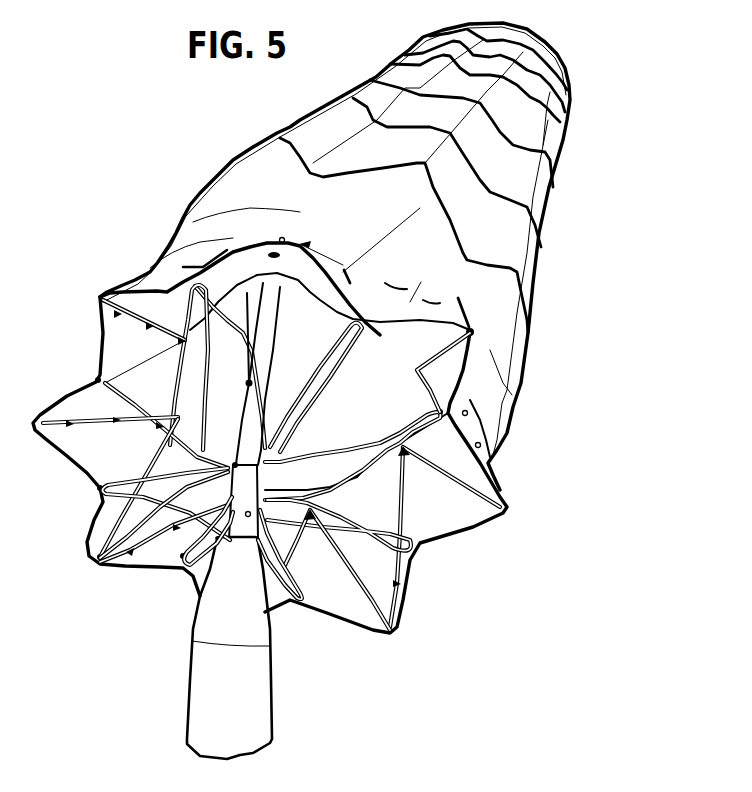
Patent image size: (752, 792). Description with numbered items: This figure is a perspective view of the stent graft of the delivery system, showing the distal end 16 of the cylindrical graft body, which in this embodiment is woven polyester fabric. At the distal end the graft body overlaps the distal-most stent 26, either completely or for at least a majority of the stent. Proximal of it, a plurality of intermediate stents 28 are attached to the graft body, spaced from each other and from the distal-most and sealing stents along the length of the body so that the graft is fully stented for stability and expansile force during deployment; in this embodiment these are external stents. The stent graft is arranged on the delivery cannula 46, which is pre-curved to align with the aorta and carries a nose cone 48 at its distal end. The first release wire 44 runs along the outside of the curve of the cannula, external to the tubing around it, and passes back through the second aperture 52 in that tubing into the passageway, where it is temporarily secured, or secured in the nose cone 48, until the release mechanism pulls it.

The distal end 16 is at (380, 256).
The distal-most stent 26 is at (566, 55).
The intermediate stents 28 is at (594, 117).
The first release wire 44 is at (233, 322).
The delivery cannula 46 is at (287, 332).
The nose cone 48 is at (252, 687).
The second aperture 52 is at (246, 382).